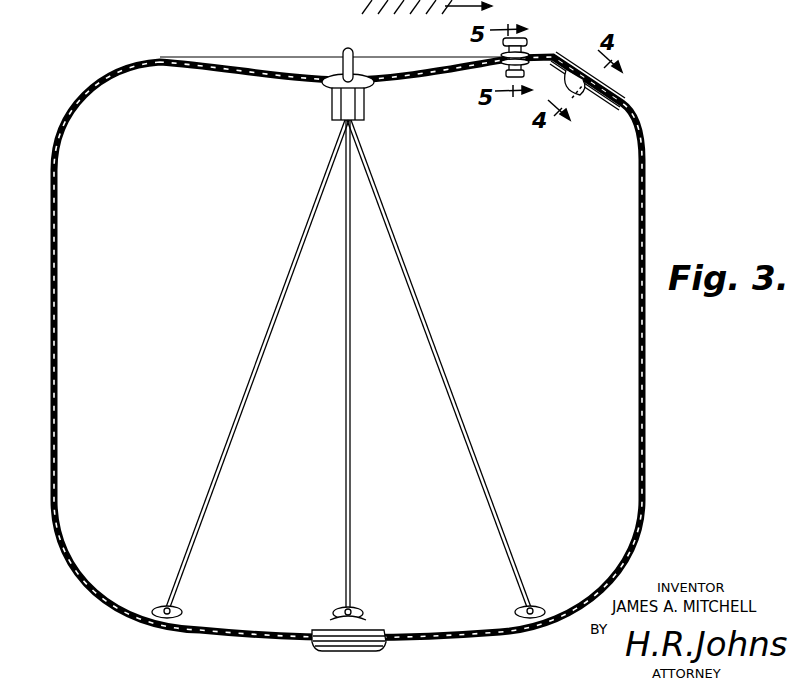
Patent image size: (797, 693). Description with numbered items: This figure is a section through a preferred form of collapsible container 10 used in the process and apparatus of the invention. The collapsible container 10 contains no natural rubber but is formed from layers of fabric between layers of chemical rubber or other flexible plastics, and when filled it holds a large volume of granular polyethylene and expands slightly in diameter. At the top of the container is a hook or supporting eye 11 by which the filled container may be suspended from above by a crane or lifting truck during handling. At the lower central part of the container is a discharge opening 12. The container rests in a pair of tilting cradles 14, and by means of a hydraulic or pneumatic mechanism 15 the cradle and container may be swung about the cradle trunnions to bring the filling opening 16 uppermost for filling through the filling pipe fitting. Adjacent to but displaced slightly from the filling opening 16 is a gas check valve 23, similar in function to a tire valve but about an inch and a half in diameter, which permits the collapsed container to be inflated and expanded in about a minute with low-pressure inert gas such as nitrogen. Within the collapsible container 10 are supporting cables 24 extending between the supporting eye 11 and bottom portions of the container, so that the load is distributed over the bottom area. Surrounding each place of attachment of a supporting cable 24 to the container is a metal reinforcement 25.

The collapsible container 10 is at (646, 209).
The supporting eye 11 is at (349, 51).
The discharge opening 12 is at (316, 640).
The tilting cradles 14 is at (85, 0).
The hydraulic or pneumatic mechanism 15 is at (216, 0).
The filling opening 16 is at (612, 93).
The gas check valve 23 is at (520, 48).
The supporting cables 24 is at (268, 362).
The metal reinforcement 25 is at (185, 606).